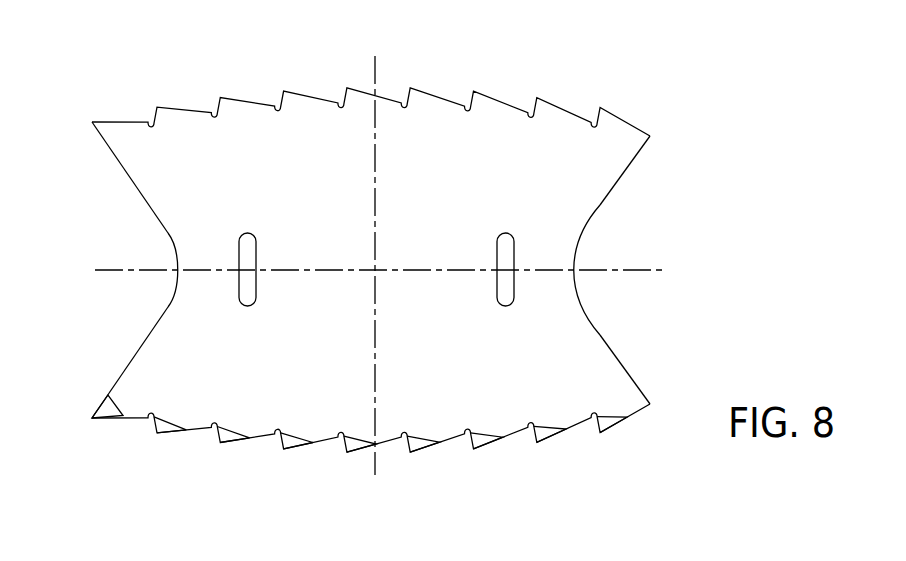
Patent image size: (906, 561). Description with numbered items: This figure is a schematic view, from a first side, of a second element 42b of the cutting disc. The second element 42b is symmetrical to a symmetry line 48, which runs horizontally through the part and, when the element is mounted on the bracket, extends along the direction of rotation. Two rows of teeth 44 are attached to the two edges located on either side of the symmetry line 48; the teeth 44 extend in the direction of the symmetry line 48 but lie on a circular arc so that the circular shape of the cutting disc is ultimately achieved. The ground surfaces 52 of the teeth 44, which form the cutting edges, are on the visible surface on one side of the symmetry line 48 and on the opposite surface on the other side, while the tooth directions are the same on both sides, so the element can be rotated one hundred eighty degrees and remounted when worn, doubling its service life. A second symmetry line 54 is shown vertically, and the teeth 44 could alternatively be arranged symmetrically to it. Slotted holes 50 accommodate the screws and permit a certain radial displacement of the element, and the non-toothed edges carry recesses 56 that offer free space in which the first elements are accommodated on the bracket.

The second element 42b is at (558, 202).
The teeth 44 is at (488, 95).
The symmetry line 48 is at (100, 272).
The slotted holes 50 is at (255, 283).
The ground surfaces 52 is at (513, 499).
The second symmetry line 54 is at (373, 62).
The recesses 56 is at (168, 237).